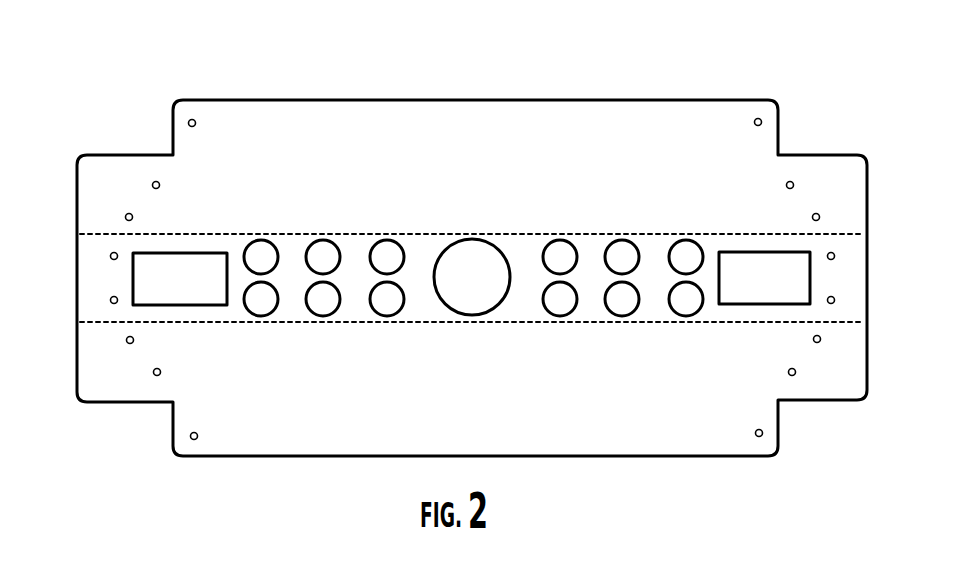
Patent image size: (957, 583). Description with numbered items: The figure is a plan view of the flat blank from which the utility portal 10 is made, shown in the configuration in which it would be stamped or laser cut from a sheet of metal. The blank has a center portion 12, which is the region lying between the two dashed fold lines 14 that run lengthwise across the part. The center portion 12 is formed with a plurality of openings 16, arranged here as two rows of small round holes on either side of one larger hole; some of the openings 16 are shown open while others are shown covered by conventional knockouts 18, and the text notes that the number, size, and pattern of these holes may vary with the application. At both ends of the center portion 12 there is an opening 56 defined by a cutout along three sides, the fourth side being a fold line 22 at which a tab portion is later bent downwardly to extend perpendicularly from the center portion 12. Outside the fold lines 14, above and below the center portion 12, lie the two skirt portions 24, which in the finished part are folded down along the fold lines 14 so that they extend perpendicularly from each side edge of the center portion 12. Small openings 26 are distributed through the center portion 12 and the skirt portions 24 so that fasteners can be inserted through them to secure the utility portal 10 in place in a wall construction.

The utility portal 10 is at (822, 60).
The center portion 12 is at (855, 299).
The fold lines 14 is at (838, 234).
The openings 16 is at (621, 255).
The knockouts 18 is at (386, 257).
The fold lines 22 is at (227, 274).
The skirt portions 24 is at (263, 142).
The openings 26 is at (795, 182).
The opening 56 is at (153, 281).